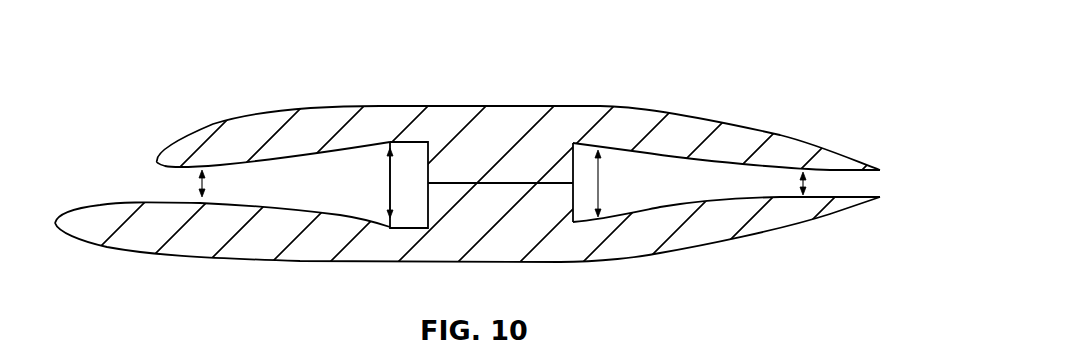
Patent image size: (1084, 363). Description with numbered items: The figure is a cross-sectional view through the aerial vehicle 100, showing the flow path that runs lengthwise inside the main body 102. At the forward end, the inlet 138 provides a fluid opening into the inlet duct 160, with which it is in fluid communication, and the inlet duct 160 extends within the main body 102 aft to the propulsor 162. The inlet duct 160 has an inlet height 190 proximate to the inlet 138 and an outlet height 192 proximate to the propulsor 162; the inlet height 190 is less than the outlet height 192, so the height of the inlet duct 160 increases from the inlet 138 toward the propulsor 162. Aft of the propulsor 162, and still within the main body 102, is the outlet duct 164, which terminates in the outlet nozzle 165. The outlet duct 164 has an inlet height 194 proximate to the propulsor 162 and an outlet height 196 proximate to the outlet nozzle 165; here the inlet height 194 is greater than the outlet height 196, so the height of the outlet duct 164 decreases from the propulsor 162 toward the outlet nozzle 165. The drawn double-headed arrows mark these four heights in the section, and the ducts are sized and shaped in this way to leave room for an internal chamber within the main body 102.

The aerial vehicle 100 is at (141, 66).
The main body 102 is at (288, 107).
The inlet 138 is at (167, 184).
The inlet duct 160 is at (279, 190).
The propulsor 162 is at (490, 148).
The outlet duct 164 is at (662, 184).
The outlet nozzle 165 is at (872, 185).
The inlet height 190 is at (207, 182).
The outlet height 192 is at (390, 182).
The inlet height 194 is at (598, 183).
The outlet height 196 is at (808, 182).